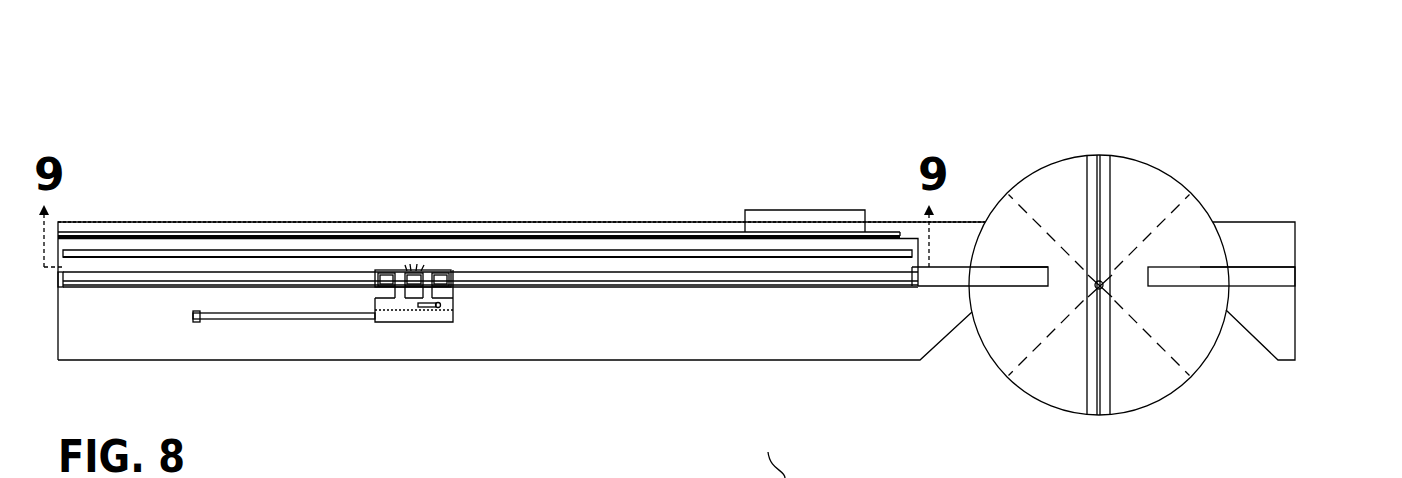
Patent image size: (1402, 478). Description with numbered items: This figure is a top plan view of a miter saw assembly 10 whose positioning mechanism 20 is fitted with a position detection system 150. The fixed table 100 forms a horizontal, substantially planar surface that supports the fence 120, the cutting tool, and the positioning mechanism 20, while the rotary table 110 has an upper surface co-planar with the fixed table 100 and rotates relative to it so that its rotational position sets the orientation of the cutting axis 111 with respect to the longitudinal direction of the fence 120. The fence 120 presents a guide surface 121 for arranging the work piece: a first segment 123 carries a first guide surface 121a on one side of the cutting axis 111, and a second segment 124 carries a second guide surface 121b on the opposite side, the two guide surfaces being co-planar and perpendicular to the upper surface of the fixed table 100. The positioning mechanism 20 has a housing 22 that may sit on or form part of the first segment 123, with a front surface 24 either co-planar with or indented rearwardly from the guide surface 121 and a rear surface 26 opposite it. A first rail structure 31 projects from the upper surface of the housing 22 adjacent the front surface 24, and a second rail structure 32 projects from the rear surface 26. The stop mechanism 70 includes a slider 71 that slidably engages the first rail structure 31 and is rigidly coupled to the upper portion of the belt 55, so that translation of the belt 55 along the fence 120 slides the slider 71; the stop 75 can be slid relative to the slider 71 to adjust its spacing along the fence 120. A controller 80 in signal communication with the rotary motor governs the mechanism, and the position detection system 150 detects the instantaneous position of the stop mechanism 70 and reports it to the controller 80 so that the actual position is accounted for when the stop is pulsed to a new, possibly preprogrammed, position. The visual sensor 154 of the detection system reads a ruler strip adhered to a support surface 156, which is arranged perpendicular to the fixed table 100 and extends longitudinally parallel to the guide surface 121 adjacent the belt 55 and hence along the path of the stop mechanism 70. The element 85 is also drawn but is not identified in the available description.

The miter saw assembly 10 is at (248, 105).
The positioning mechanism 20 is at (457, 268).
The housing 22 is at (158, 245).
The front surface 24 is at (707, 287).
The rear surface 26 is at (653, 232).
The first rail structure 31 is at (238, 277).
The second rail structure 32 is at (212, 233).
The belt 55 is at (260, 278).
The stop mechanism 70 is at (367, 335).
The slider 71 is at (427, 270).
The stop 75 is at (453, 305).
The controller 80 is at (793, 210).
The connector 85 is at (771, 452).
The fixed table 100 is at (168, 338).
The rotary table 110 is at (1192, 357).
The cutting axis 111 is at (1101, 388).
The fence 120 is at (990, 262).
The guide surface 121 is at (843, 287).
The first guide surface 121a is at (997, 287).
The second guide surface 121b is at (1275, 287).
The first segment 123 is at (1028, 287).
The second segment 124 is at (1288, 276).
The position detection system 150 is at (422, 248).
The visual sensor 154 is at (410, 268).
The support surface 156 is at (78, 262).